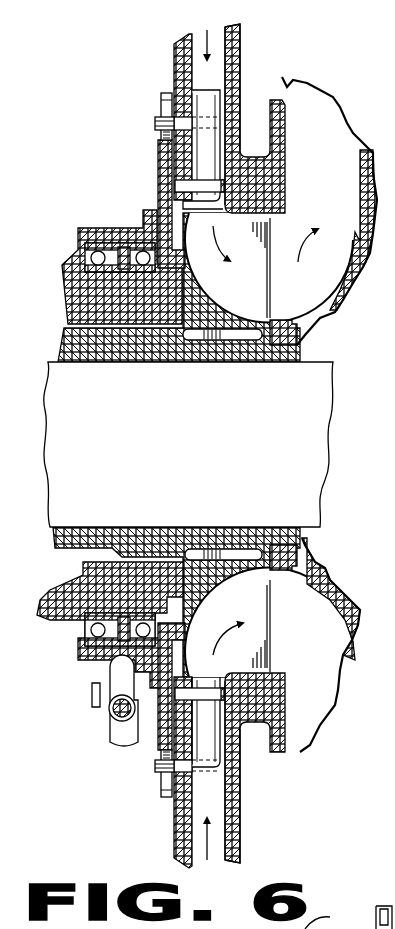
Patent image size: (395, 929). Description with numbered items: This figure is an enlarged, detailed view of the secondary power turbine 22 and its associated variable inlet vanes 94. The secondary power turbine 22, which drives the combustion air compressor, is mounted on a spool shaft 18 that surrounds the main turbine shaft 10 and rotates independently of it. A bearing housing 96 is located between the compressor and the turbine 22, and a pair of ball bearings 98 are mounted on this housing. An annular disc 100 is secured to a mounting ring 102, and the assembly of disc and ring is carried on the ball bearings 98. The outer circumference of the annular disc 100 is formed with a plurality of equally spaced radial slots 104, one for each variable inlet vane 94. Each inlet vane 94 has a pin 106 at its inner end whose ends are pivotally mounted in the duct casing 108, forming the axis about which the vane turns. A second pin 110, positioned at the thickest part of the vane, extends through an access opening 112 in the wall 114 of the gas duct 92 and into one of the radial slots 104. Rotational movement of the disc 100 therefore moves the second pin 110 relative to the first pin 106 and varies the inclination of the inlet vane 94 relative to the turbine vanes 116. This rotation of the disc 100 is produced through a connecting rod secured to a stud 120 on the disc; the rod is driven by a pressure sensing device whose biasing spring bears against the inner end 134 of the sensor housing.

The main turbine shaft 10 is at (233, 454).
The spool shaft 18 is at (147, 355).
The secondary power turbine 22 is at (264, 293).
The gas duct 92 is at (200, 36).
The variable inlet vane 94 is at (208, 147).
The bearing housing 96 is at (54, 620).
The ball bearings 98 is at (108, 237).
The annular disc 100 is at (158, 160).
The mounting ring 102 is at (124, 228).
The radial slot 104 is at (164, 100).
The pin 106 is at (237, 185).
The duct casing 108 is at (245, 728).
The second pin 110 is at (193, 122).
The access opening 112 is at (158, 122).
The wall 114 is at (176, 63).
The turbine vanes 116 is at (268, 245).
The stud 120 is at (100, 718).
The inner end of the sensor housing 134 is at (348, 907).